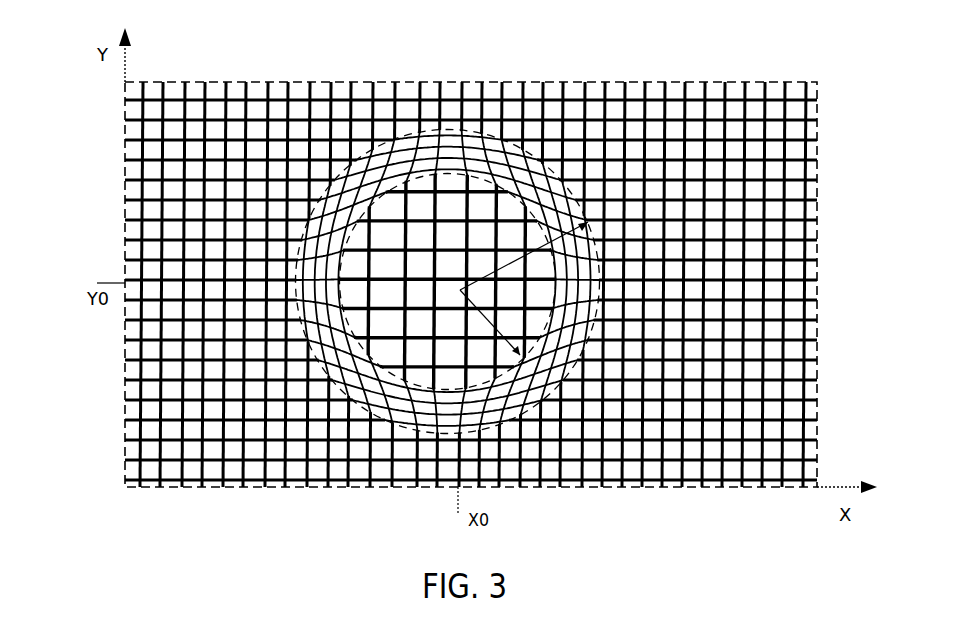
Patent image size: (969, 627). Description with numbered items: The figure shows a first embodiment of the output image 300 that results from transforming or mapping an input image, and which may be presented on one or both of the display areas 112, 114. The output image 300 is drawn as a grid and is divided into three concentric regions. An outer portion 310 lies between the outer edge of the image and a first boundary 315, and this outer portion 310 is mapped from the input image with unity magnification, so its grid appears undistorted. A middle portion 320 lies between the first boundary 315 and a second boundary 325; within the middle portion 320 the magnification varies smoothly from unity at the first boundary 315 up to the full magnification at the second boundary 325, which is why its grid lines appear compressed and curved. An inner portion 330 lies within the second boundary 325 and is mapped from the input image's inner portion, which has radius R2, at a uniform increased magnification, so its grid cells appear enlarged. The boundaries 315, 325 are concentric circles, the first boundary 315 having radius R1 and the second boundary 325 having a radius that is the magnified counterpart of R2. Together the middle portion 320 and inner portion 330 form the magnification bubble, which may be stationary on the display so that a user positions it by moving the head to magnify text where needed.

The output image 300 is at (411, 262).
The display area 112 is at (235, 82).
The display area 114 is at (471, 262).
The outer portion 310 is at (471, 284).
The first boundary 315 is at (490, 133).
The middle portion 320 is at (448, 281).
The second boundary 325 is at (547, 164).
The inner portion 330 is at (447, 281).
The radius of first boundary R1 is at (538, 245).
The radius of inner portion R2 is at (519, 325).